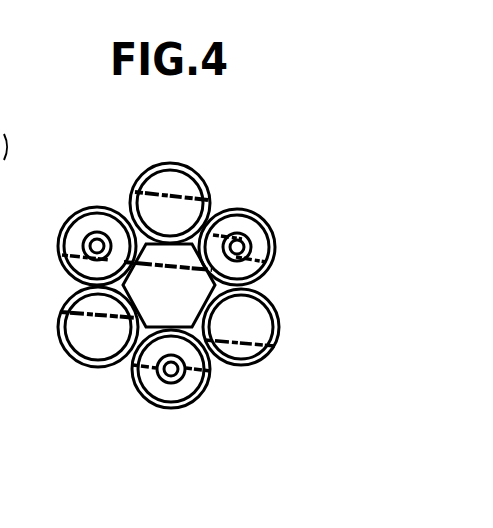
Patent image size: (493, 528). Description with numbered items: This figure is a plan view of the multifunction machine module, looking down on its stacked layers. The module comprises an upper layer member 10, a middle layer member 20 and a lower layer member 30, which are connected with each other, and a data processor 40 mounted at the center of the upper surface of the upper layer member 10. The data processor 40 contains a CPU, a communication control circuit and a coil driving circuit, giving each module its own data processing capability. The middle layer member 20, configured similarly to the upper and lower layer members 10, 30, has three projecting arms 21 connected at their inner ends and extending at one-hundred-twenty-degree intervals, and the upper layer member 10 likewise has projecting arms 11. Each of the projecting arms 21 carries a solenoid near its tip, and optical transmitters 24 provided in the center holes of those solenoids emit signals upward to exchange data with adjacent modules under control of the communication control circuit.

The upper layer member 10 is at (277, 361).
The lower layer member 30 is at (164, 310).
The projecting arms 11 is at (188, 170).
The middle layer member 20 is at (190, 408).
The projecting arms 21 is at (75, 238).
The optical transmitters 24 is at (97, 243).
The data processor 40 is at (204, 277).